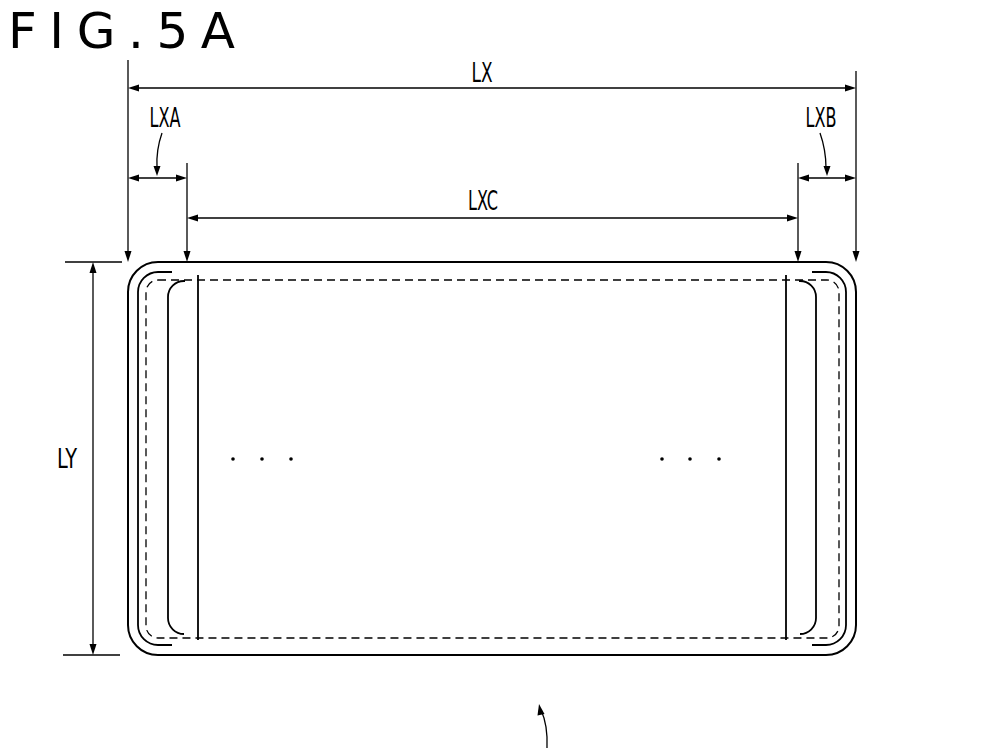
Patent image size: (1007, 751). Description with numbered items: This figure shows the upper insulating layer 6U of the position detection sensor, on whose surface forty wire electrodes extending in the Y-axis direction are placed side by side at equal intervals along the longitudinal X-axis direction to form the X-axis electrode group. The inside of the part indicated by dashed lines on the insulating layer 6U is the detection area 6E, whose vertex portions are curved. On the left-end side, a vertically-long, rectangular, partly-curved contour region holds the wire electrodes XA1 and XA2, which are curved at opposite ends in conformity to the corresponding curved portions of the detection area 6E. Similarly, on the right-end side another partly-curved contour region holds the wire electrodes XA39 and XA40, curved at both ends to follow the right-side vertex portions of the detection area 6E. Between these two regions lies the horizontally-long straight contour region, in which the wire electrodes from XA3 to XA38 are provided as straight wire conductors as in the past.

The wire electrode XA1 is at (147, 637).
The wire electrode XA2 is at (180, 636).
The wire electrode XA3 is at (198, 593).
The wire electrode XA38 is at (786, 593).
The wire electrode XA39 is at (811, 630).
The wire electrode XA40 is at (840, 632).
The insulating layer 6U is at (404, 656).
The detection area 6E is at (571, 639).